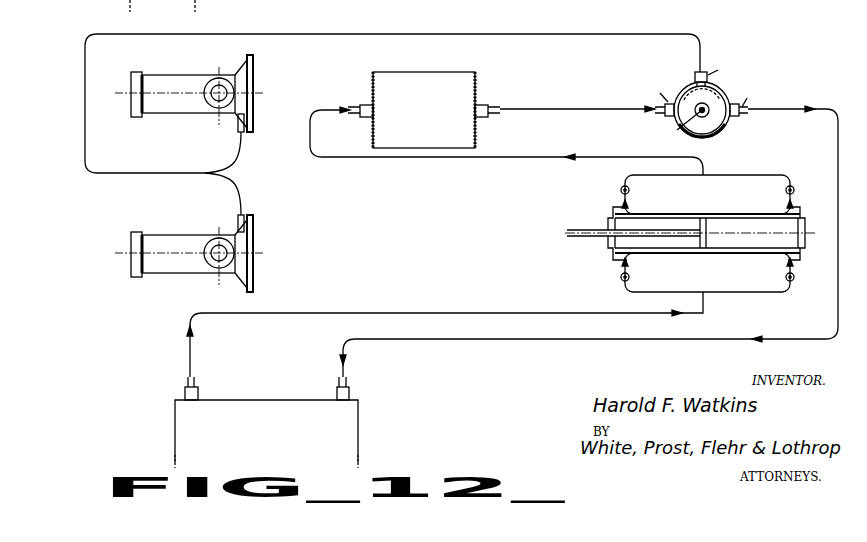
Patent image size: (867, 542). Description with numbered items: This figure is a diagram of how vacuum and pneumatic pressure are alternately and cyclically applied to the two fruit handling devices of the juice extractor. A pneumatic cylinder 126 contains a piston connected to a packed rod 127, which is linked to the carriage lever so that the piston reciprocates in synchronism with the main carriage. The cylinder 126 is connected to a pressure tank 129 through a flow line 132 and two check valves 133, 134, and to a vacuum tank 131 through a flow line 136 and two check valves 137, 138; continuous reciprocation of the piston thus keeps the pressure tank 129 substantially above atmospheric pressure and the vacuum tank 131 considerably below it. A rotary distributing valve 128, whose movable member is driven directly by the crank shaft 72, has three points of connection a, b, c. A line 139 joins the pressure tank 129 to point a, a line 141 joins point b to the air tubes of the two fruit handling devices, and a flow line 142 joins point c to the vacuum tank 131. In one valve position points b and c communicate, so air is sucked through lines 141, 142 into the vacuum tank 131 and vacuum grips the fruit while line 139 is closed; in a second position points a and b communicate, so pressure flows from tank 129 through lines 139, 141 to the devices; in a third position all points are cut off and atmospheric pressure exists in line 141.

The crank shaft 72 is at (676, 128).
The pneumatic cylinder 126 is at (733, 255).
The packed rod 127 is at (583, 233).
The distributing valve 128 is at (720, 90).
The pressure tank 129 is at (417, 77).
The vacuum tank 131 is at (253, 403).
The flow line 132 is at (525, 158).
The check valve 133 is at (621, 189).
The check valve 134 is at (794, 187).
The flow line 136 is at (465, 311).
The check valve 137 is at (620, 277).
The check valve 138 is at (791, 281).
The line 139 is at (560, 107).
The line 141 is at (592, 32).
The flow line 142 is at (570, 339).
The point of connection A a is at (657, 90).
The point of connection B b is at (720, 64).
The point of connection C c is at (750, 93).